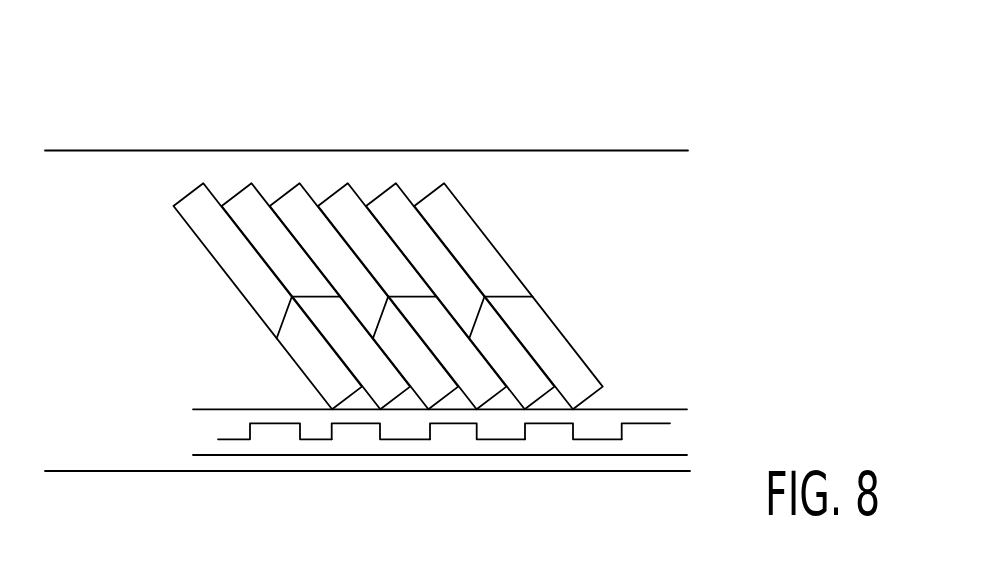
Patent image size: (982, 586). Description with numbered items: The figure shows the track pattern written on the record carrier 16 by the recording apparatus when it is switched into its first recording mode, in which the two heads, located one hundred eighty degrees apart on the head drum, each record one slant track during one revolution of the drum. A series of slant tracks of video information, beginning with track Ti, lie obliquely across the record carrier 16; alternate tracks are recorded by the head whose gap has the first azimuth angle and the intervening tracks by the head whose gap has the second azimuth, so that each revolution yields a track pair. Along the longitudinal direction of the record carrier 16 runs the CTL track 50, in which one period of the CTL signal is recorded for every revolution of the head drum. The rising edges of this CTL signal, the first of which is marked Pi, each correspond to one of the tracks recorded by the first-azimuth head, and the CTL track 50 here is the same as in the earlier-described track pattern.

The record carrier 16 is at (585, 150).
The CTL track 50 is at (653, 458).
The slant track Ti is at (193, 203).
The rising edge of CTL signal Pi is at (333, 426).